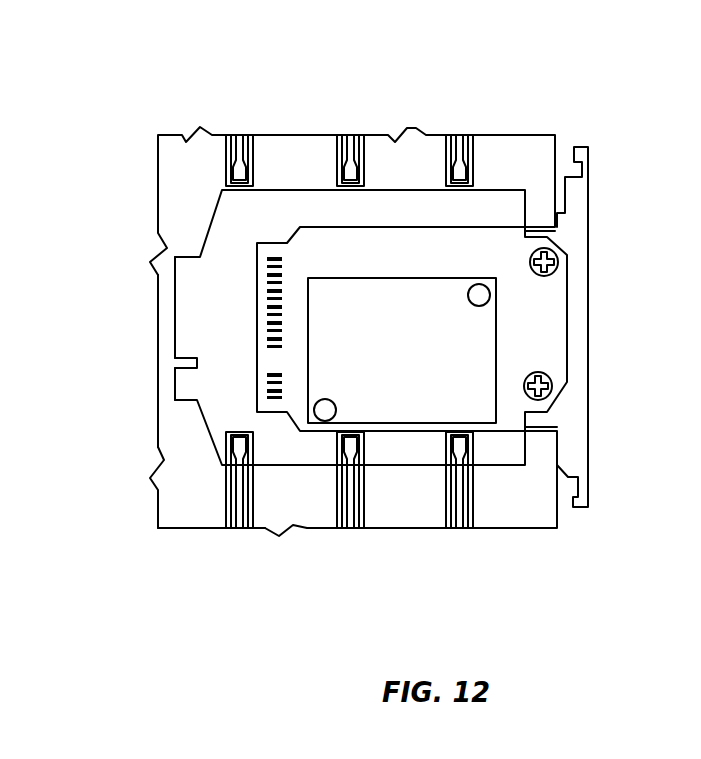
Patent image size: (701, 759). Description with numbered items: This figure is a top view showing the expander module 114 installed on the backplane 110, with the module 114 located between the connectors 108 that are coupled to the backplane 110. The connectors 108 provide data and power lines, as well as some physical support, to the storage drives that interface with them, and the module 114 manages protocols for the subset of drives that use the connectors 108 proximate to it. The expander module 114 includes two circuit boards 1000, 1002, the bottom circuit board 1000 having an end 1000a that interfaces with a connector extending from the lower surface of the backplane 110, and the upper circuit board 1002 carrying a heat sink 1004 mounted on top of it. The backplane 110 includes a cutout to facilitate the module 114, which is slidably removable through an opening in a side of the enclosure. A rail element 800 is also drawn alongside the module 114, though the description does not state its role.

The connectors 108 is at (240, 163).
The backplane 110 is at (180, 517).
The expander module 114 is at (396, 157).
The mounting rail 800 is at (582, 507).
The circuit board 1000 is at (302, 460).
The end of the lower circuit board 1000a is at (183, 325).
The circuit board 1002 is at (390, 265).
The heat sink 1004 is at (387, 358).